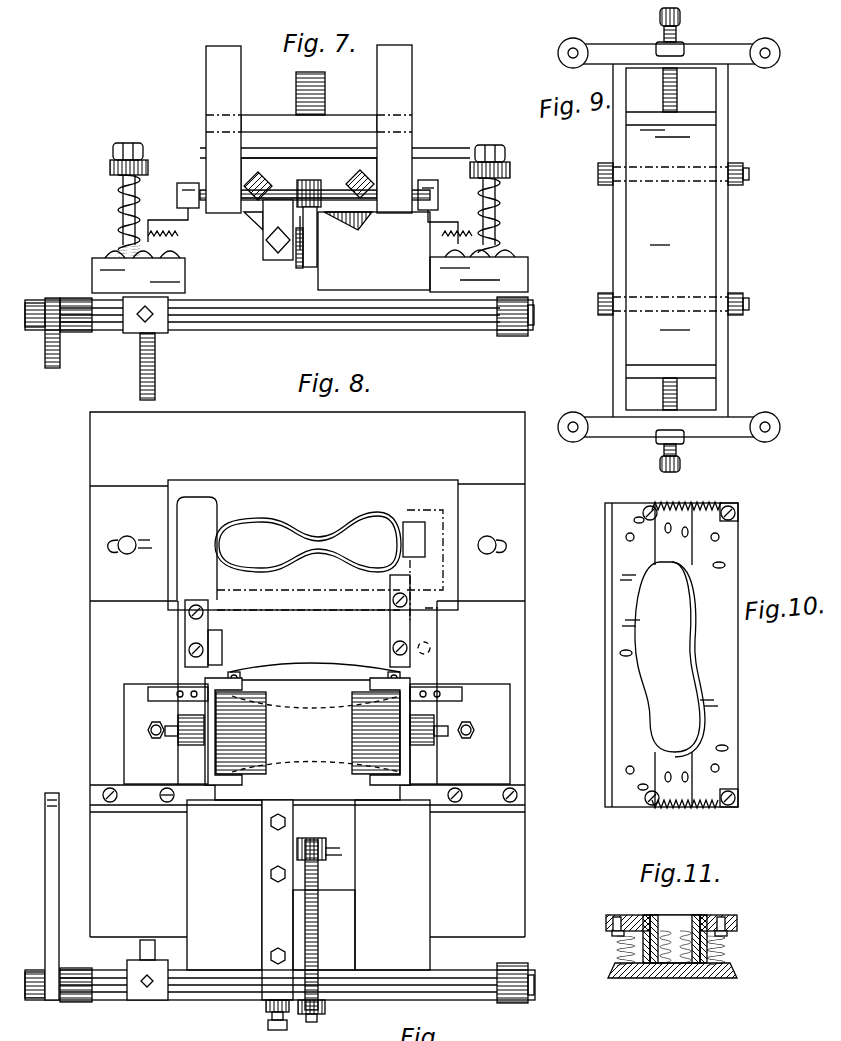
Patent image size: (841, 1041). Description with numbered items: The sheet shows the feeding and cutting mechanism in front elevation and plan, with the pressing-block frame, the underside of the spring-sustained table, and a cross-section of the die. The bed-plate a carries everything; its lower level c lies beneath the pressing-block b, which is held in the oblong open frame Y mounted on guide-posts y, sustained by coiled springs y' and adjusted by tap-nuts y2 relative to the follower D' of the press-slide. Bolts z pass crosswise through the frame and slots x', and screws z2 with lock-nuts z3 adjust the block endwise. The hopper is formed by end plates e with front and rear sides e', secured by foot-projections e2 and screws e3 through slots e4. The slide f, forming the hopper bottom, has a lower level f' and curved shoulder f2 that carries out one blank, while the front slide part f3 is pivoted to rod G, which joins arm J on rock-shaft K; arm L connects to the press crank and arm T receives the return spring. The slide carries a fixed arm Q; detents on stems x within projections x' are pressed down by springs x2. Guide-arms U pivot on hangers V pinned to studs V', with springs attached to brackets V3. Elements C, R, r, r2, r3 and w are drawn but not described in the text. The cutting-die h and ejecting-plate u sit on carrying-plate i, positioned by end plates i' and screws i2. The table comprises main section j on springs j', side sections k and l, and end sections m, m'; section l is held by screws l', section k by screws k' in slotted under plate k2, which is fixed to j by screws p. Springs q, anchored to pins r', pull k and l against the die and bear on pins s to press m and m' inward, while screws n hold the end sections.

In FIG. 7, the bed-plate a is at (310, 252).
In FIG. 8, the bed-plate a is at (307, 691).
In FIG. 7, the pressing-block b is at (335, 173).
In FIG. 9, the pressing-block b is at (671, 239).
In FIG. 8, the lower level of the bed-plate c is at (307, 693).
In FIG. 7, the hopper end plate e is at (302, 129).
In FIG. 8, the hopper end plate e is at (311, 731).
In FIG. 7, the hopper front and rear sides e' is at (311, 92).
In FIG. 8, the hopper front and rear sides e' is at (306, 741).
In FIG. 8, the foot-projection e2 is at (312, 767).
In FIG. 8, the securing screw e3 is at (313, 732).
In FIG. 8, the slot e4 is at (310, 715).
In FIG. 7, the follower of the press-slide D' is at (309, 103).
In FIG. 7, the bolt z is at (303, 185).
In FIG. 9, the bolt z is at (665, 239).
In FIG. 9, the adjusting screw z2 is at (678, 240).
In FIG. 9, the lock-nut z3 is at (668, 243).
In FIG. 8, the vertical stem x is at (314, 668).
In FIG. 7, the projections x' is at (315, 178).
In FIG. 8, the projections x' is at (315, 669).
In FIG. 7, the spring x2 is at (353, 164).
In FIG. 7, the slide block C is at (309, 215).
In FIG. 7, the fixed arm Q is at (278, 230).
In FIG. 8, the fixed arm Q is at (277, 900).
In FIG. 7, the nut R is at (249, 251).
In FIG. 8, the nut R is at (266, 1015).
In FIG. 7, the arm J is at (303, 250).
In FIG. 8, the arm J is at (326, 1015).
In FIG. 7, the rock-shaft K is at (279, 323).
In FIG. 8, the rock-shaft K is at (280, 987).
In FIG. 7, the arm L is at (42, 333).
In FIG. 8, the arm L is at (43, 896).
In FIG. 7, the arm T is at (146, 348).
In FIG. 8, the arm T is at (147, 970).
In FIG. 8, the horizontal rod G is at (324, 930).
In FIG. 8, the slide f is at (307, 740).
In FIG. 8, the lower surface-level f' is at (308, 615).
In FIG. 8, the shoulder f2 is at (316, 711).
In FIG. 7, the front slide part f3 is at (308, 213).
In FIG. 8, the front slide part f3 is at (333, 838).
In FIG. 7, the lever r is at (299, 200).
In FIG. 7, the pin r' is at (311, 169).
In FIG. 10, the pin r' is at (692, 659).
In FIG. 7, the spring r2 is at (310, 226).
In FIG. 7, the arm r3 is at (458, 197).
In FIG. 7, the guide-post y is at (310, 143).
In FIG. 7, the spring y' is at (309, 216).
In FIG. 7, the tap-nut y2 is at (308, 159).
In FIG. 9, the open frame Y is at (669, 246).
In FIG. 8, the side surface-section k is at (313, 545).
In FIG. 10, the side surface-section k is at (667, 657).
In FIG. 11, the side surface-section k is at (617, 914).
In FIG. 10, the screw k' is at (717, 656).
In FIG. 11, the screw k' is at (598, 942).
In FIG. 10, the under plate k2 is at (697, 659).
In FIG. 11, the under plate k2 is at (612, 926).
In FIG. 8, the carrying-plate i is at (306, 553).
In FIG. 11, the carrying-plate i is at (672, 981).
In FIG. 8, the end plate i' is at (310, 519).
In FIG. 8, the screw i2 is at (484, 545).
In FIG. 8, the horizontal guide-arm U is at (325, 584).
In FIG. 8, the ejecting-plate u is at (308, 542).
In FIG. 11, the ejecting-plate u is at (675, 930).
In FIG. 8, the cutting-die h is at (423, 582).
In FIG. 11, the cutting-die h is at (645, 918).
In FIG. 8, the slide w is at (216, 647).
In FIG. 8, the hanger V is at (308, 730).
In FIG. 8, the stud V' is at (310, 743).
In FIG. 8, the bracket V3 is at (317, 734).
In FIG. 10, the main surface-section j is at (664, 655).
In FIG. 11, the main surface-section j is at (680, 918).
In FIG. 11, the spring j' is at (666, 941).
In FIG. 10, the spring q is at (686, 657).
In FIG. 10, the screw p is at (636, 520).
In FIG. 10, the screw n is at (672, 655).
In FIG. 10, the end surface-section m is at (673, 534).
In FIG. 10, the end surface-section m' is at (673, 779).
In FIG. 10, the pin s is at (686, 793).
In FIG. 10, the side surface-section l is at (668, 640).
In FIG. 11, the side surface-section l is at (705, 926).
In FIG. 10, the screw l' is at (622, 660).
In FIG. 11, the screw l' is at (748, 944).